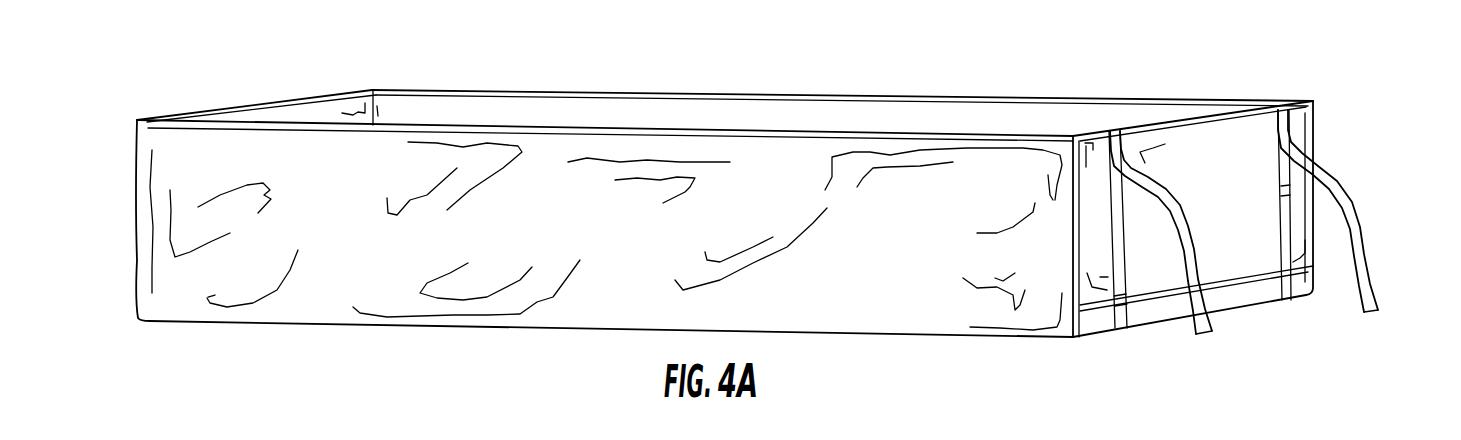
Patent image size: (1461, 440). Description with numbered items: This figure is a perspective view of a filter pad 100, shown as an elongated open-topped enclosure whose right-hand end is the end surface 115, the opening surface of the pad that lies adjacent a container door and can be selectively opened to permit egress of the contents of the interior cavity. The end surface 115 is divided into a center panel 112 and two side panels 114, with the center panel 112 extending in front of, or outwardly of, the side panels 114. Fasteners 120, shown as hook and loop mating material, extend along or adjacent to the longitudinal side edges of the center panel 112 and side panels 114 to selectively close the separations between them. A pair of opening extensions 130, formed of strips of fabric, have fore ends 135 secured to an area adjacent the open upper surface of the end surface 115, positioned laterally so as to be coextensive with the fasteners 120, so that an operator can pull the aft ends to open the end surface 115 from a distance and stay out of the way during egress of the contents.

The filter pad 100 is at (903, 59).
The center panel 112 is at (1243, 203).
The side panel 114 is at (1093, 158).
The end surface 115 is at (1220, 167).
The fastener 120 is at (1120, 300).
The opening extension 130 is at (1357, 250).
The fore end 135 is at (1113, 130).